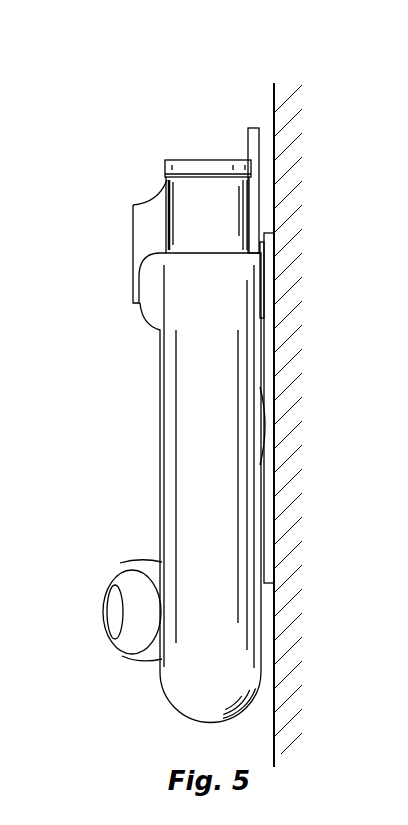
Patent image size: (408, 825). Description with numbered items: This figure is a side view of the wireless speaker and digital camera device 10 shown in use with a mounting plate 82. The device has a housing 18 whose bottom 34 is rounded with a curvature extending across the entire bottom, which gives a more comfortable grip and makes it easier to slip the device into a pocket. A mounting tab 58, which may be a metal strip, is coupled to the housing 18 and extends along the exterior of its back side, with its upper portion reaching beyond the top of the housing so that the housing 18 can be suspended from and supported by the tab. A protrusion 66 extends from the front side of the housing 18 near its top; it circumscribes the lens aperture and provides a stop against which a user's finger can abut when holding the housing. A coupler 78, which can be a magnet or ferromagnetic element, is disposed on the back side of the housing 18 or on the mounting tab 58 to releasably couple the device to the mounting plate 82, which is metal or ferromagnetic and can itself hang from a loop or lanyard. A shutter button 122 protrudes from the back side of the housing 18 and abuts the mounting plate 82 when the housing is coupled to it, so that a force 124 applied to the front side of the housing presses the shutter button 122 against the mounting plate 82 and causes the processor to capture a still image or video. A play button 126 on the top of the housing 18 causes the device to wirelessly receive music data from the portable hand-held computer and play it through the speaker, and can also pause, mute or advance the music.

The wireless speaker and digital camera device 10 is at (126, 704).
The housing 18 is at (202, 208).
The bottom 34 is at (203, 723).
The mounting tab 58 is at (256, 127).
The protrusion 66 is at (147, 213).
The coupler 78 is at (261, 262).
The mounting plate 82 is at (269, 358).
The shutter button 122 is at (258, 433).
The force 124 is at (18, 612).
The play button 126 is at (213, 158).